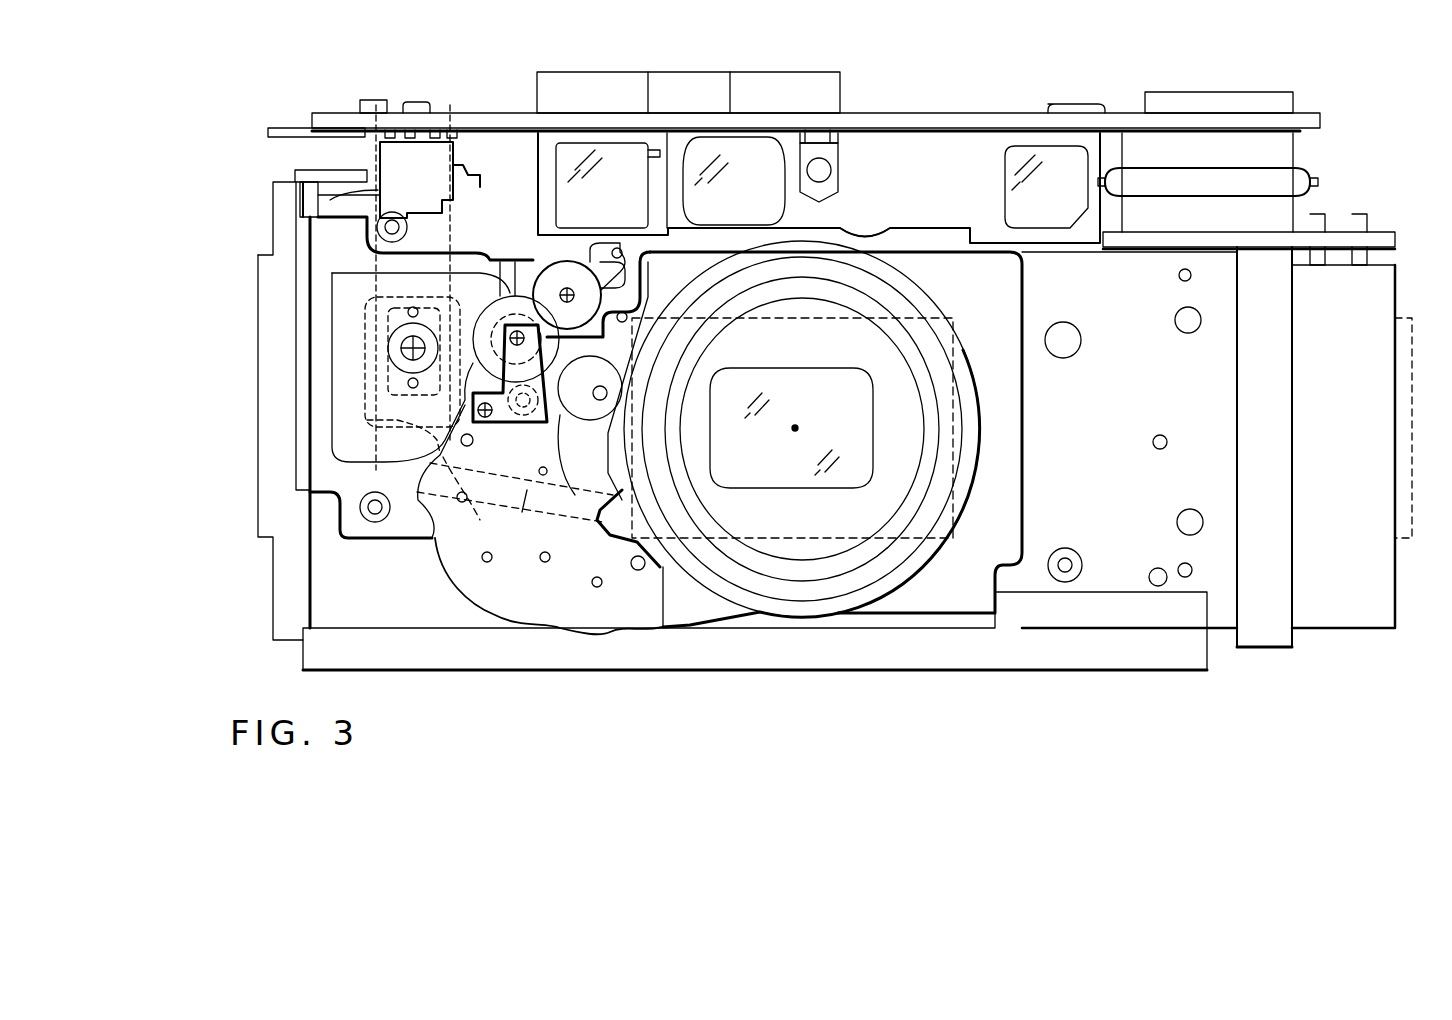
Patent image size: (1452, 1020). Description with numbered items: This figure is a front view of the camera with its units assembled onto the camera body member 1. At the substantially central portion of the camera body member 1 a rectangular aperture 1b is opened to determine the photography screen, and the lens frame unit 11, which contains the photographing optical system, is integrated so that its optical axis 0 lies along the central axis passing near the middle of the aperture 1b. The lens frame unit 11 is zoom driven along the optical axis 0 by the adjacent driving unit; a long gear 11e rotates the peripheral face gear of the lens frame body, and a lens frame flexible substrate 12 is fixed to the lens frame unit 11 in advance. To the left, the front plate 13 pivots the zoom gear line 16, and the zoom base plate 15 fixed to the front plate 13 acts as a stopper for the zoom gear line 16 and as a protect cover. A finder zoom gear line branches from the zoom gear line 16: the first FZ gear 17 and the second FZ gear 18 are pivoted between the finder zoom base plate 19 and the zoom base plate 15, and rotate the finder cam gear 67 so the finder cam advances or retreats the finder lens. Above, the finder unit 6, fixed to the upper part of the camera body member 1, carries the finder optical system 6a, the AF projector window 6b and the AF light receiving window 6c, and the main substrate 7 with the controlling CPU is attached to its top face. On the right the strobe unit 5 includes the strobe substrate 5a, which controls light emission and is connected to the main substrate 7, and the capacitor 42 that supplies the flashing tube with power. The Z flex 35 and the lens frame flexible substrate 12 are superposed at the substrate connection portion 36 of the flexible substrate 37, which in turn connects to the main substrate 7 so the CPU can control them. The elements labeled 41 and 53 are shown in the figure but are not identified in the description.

The camera body member 1 is at (333, 585).
The rectangular aperture 1b is at (836, 330).
The optical axis 0 is at (800, 422).
The strobe unit 5 is at (1335, 166).
The strobe substrate 5a is at (1378, 243).
The finder unit 6 is at (883, 150).
The finder optical system 6a is at (633, 165).
The AF projector window 6b is at (765, 160).
The AF light receiving window 6c is at (1068, 160).
The main substrate 7 is at (470, 114).
The lens frame unit 11 is at (950, 590).
The long gear 11e is at (600, 402).
The lens frame flexible substrate 12 is at (523, 500).
The front plate 13 is at (345, 348).
The zoom base plate 15 is at (612, 605).
The zoom gear line 16 is at (530, 505).
The first FZ gear 17 is at (520, 420).
The second FZ gear 18 is at (507, 303).
The finder zoom base plate 19 is at (513, 318).
The Z flex 35 is at (367, 330).
The substrate connection portion 36 is at (412, 300).
The flexible substrate (MA flex) 37 is at (385, 140).
The grip 41 is at (1412, 485).
The capacitor 42 is at (1378, 279).
The motor 53 is at (561, 250).
The finder cam gear 67 is at (592, 262).